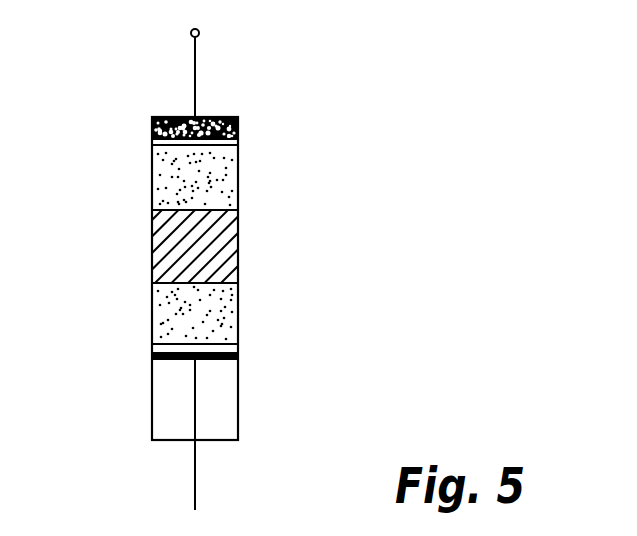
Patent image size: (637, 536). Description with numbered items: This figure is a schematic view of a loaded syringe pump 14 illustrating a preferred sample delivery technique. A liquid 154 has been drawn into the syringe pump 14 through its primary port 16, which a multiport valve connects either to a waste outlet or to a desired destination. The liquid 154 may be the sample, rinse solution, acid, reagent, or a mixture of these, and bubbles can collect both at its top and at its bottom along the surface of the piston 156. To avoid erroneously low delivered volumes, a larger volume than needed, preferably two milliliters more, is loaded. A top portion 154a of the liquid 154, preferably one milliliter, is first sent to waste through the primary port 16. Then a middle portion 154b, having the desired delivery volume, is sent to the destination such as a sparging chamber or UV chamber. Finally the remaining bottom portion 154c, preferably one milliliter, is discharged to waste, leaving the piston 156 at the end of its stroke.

The syringe pump 14 is at (86, 271).
The primary port 16 is at (190, 32).
The liquid 154 is at (158, 190).
The top portion 154a is at (228, 172).
The middle portion 154b is at (227, 243).
The bottom portion 154c is at (225, 313).
The piston 156 is at (215, 366).